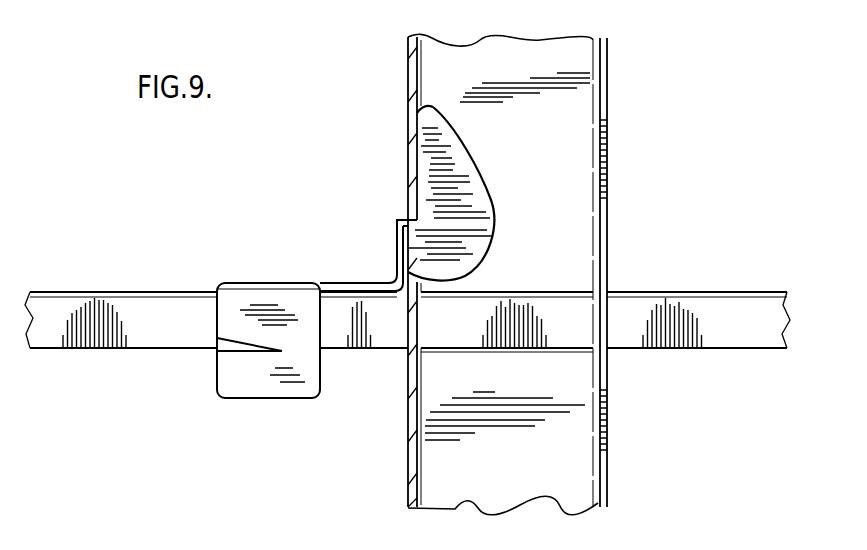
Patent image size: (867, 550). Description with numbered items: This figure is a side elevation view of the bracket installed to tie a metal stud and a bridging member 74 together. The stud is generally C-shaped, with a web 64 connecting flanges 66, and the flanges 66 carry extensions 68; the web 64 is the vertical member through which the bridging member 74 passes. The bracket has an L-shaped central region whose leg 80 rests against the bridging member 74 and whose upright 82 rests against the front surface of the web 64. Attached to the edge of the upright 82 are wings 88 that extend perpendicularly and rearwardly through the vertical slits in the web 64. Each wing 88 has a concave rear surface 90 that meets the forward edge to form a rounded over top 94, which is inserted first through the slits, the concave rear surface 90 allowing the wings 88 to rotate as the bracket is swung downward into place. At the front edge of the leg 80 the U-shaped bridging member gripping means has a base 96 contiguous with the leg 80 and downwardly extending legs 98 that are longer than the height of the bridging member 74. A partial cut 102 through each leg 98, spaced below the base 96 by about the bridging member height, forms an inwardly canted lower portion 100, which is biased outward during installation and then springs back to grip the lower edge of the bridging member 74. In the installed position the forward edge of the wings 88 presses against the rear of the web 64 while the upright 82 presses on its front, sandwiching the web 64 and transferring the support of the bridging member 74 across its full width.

The web 64 is at (409, 68).
The flanges 66 is at (512, 62).
The extensions 68 is at (606, 95).
The bridging member 74 is at (698, 338).
The leg 80 is at (358, 281).
The upright 82 is at (397, 237).
The wings 88 is at (466, 211).
The concave rear surface 90 is at (476, 166).
The rounded over top 94 is at (424, 108).
The base 96 is at (262, 283).
The downwardly extending legs 98 is at (227, 320).
The inwardly canted lower portion 100 is at (236, 385).
The partial cut 102 is at (238, 347).